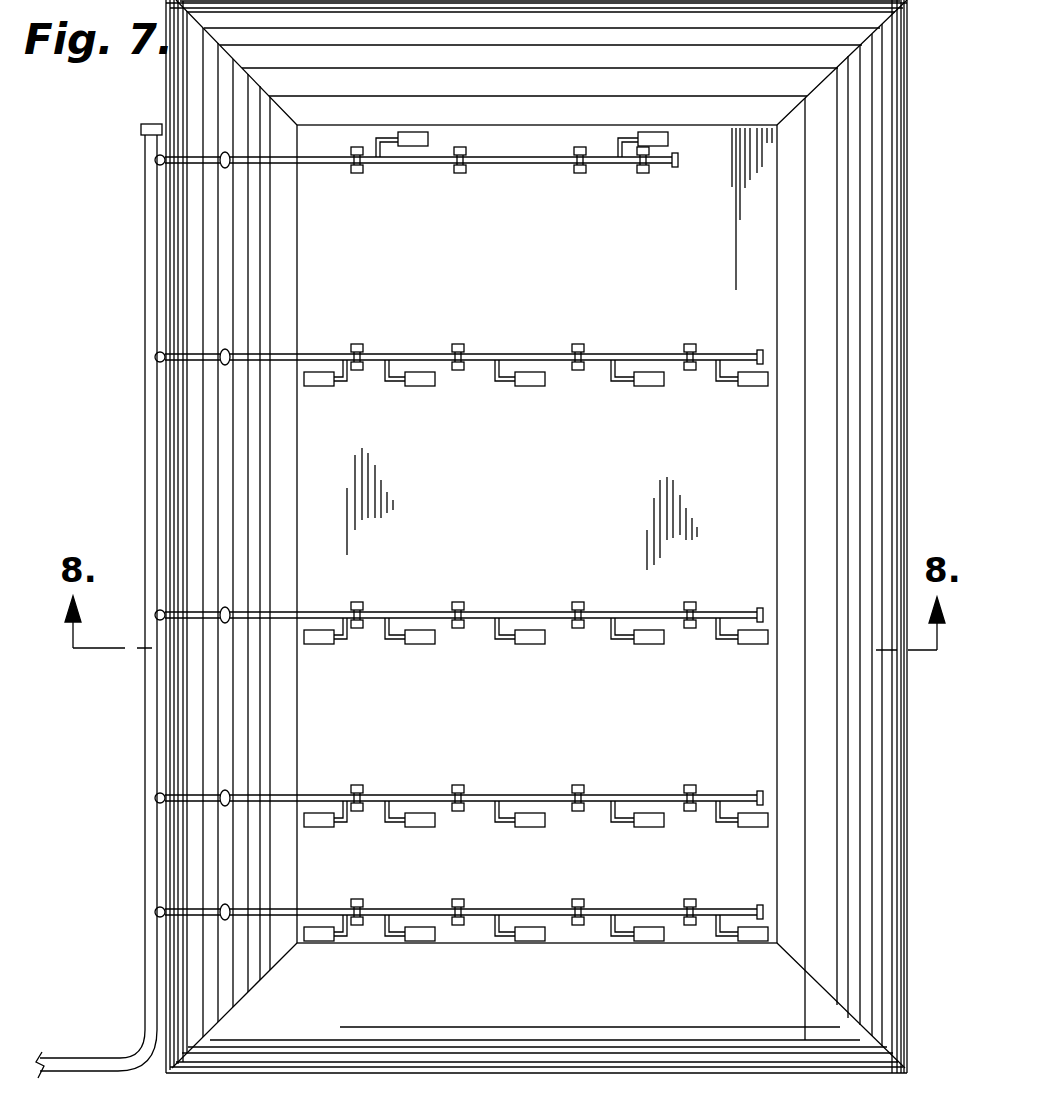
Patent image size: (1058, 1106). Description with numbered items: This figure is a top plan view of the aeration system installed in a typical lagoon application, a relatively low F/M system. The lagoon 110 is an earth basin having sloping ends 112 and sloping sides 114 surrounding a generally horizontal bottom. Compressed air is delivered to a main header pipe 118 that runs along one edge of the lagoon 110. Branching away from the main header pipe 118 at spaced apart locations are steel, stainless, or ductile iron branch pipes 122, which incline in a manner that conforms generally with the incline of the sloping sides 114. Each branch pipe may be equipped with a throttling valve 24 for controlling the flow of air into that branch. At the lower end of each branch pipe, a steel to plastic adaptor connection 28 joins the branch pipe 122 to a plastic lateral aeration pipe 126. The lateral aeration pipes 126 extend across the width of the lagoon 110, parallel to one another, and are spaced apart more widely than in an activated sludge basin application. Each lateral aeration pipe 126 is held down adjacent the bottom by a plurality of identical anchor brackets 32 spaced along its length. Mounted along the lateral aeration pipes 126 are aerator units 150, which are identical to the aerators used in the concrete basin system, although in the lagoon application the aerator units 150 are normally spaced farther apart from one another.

The lagoon 110 is at (910, 268).
The sloping ends 112 is at (846, 37).
The sloping sides 114 is at (194, 458).
The main header pipe 118 is at (150, 679).
The throttling valve 24 is at (156, 163).
The branch pipes 122 is at (200, 172).
The steel to plastic adaptor connections 28 is at (232, 168).
The lateral aeration pipes 126 is at (550, 166).
The anchor brackets 32 is at (458, 172).
The aerator units 150 is at (410, 132).